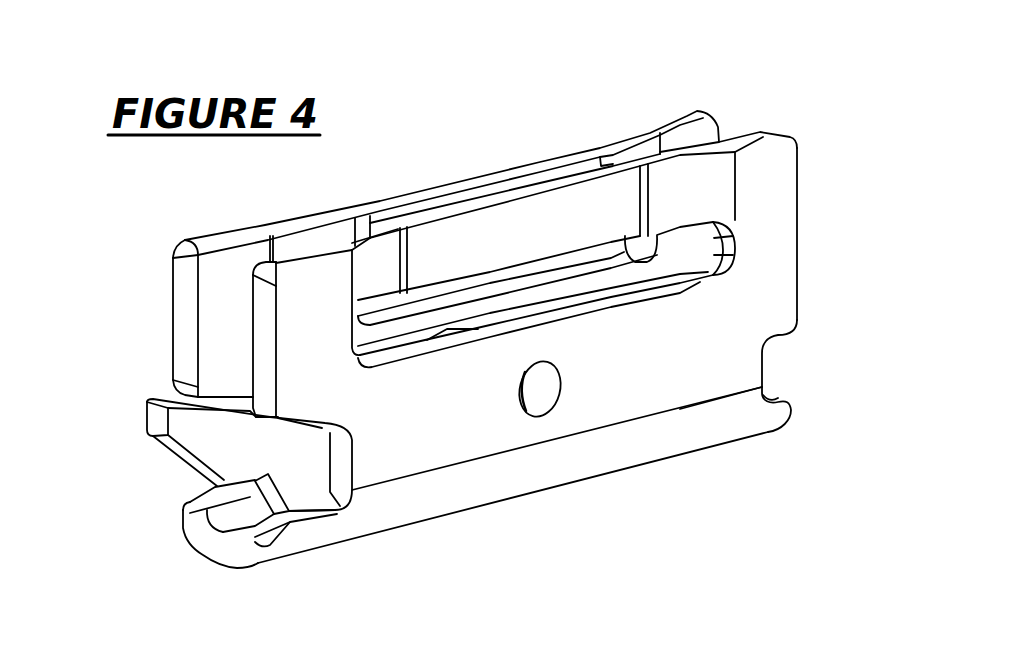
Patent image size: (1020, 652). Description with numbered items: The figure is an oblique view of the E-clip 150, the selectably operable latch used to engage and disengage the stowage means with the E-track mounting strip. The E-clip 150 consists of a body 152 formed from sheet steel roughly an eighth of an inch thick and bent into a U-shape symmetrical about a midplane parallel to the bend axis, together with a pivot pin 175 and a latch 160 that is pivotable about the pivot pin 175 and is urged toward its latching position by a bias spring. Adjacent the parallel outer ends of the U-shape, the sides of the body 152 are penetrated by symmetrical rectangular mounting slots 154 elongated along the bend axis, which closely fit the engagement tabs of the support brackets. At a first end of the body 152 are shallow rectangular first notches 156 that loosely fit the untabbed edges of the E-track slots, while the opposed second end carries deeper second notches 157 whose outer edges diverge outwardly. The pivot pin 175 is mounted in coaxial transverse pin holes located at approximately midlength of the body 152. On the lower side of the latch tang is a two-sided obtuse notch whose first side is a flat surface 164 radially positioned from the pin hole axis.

The E-clip 150 is at (484, 364).
The body 152 is at (440, 186).
The mounting slots 154 is at (733, 272).
The first notches 156 is at (762, 372).
The second notches 157 is at (352, 476).
The latch 160 is at (178, 466).
The flat surface 164 is at (237, 481).
The pivot pin 175 is at (553, 406).